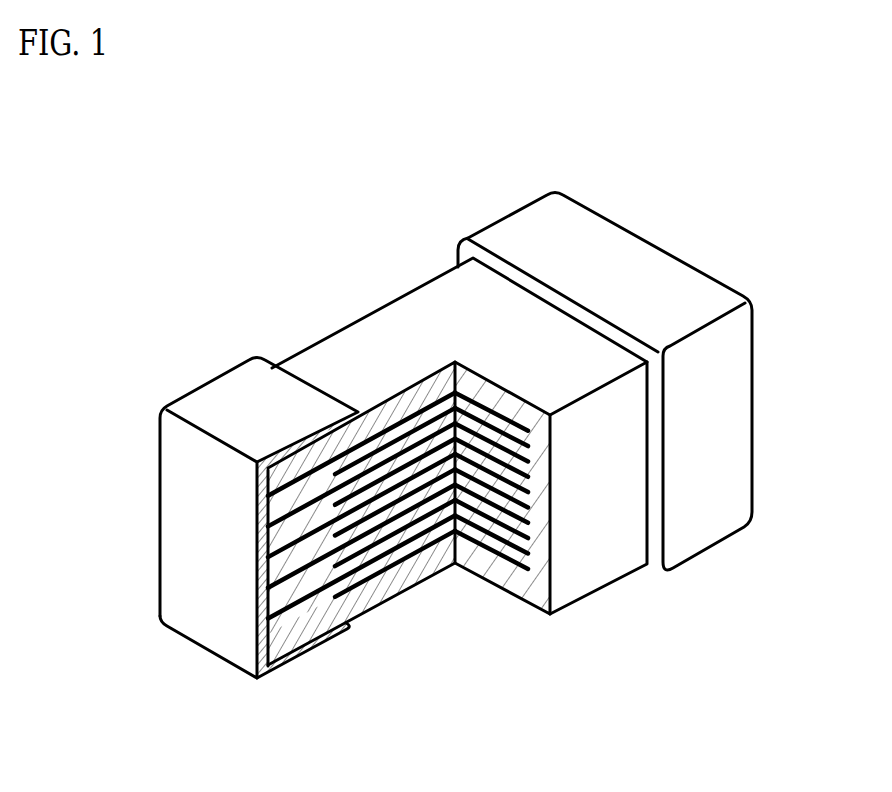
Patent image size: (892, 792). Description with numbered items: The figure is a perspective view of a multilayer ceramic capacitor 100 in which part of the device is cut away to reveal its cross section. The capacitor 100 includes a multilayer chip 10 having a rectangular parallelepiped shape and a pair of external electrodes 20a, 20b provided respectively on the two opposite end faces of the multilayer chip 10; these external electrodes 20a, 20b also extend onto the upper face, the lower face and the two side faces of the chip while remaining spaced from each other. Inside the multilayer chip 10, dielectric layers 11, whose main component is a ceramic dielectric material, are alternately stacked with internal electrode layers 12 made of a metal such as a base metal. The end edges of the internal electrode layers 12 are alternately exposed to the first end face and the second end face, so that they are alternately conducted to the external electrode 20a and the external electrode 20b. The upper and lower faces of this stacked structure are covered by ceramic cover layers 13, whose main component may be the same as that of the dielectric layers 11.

The multilayer ceramic capacitor 100 is at (855, 124).
The multilayer chip 10 is at (425, 480).
The dielectric layer 11 is at (390, 552).
The internal electrode layer 12 is at (422, 542).
The cover layer 13 is at (428, 303).
The external electrode 20a is at (190, 394).
The external electrode 20b is at (513, 230).